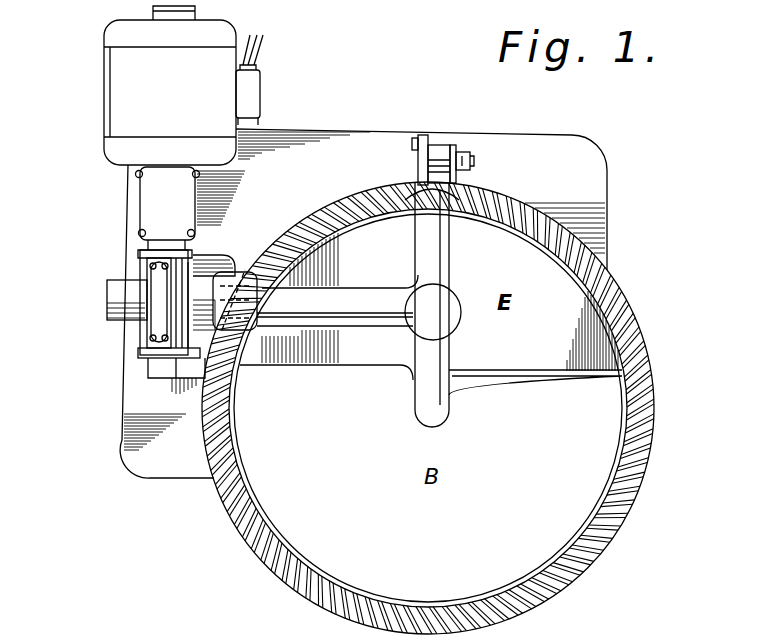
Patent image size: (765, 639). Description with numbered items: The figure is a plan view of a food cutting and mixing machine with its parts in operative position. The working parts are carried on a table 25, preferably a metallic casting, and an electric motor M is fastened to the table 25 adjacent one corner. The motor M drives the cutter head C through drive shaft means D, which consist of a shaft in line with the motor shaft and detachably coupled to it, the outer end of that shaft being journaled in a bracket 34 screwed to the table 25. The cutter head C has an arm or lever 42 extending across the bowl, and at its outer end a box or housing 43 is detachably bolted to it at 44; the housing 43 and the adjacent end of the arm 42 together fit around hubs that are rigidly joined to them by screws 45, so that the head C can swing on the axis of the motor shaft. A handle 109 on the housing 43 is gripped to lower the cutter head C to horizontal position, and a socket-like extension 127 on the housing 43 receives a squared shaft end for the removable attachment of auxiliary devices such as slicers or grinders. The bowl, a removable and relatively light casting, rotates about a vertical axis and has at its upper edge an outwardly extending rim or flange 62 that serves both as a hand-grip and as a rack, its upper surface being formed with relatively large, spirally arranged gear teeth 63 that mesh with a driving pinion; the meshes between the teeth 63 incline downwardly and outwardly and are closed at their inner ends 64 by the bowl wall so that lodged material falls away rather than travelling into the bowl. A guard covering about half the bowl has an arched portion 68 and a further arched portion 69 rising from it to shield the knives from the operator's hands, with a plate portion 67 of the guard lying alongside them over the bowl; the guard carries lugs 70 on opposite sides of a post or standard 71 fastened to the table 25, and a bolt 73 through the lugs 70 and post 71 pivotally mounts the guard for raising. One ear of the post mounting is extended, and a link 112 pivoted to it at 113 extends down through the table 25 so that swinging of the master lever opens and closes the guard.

The electric motor M is at (122, 94).
The drive shaft means D is at (148, 221).
The cutter head C is at (232, 270).
The table 25 is at (606, 229).
The bracket 34 is at (164, 380).
The arm or lever 42 is at (230, 289).
The box or housing 43 is at (148, 329).
The bolts 44 is at (200, 262).
The screws 45 is at (146, 360).
The rim or flange 62 is at (451, 408).
The gear teeth 63 is at (652, 410).
The inner ends of meshes 64 is at (628, 510).
The lower plate 67 is at (535, 343).
The arched portion 68 is at (452, 272).
The arched portion 69 is at (360, 292).
The lugs 70 is at (447, 160).
The post or standard 71 is at (440, 155).
The bolt 73 is at (474, 166).
The handle 109 is at (158, 284).
The link 112 is at (416, 150).
The pivot 113 is at (424, 140).
The socket-like extension 127 is at (118, 310).